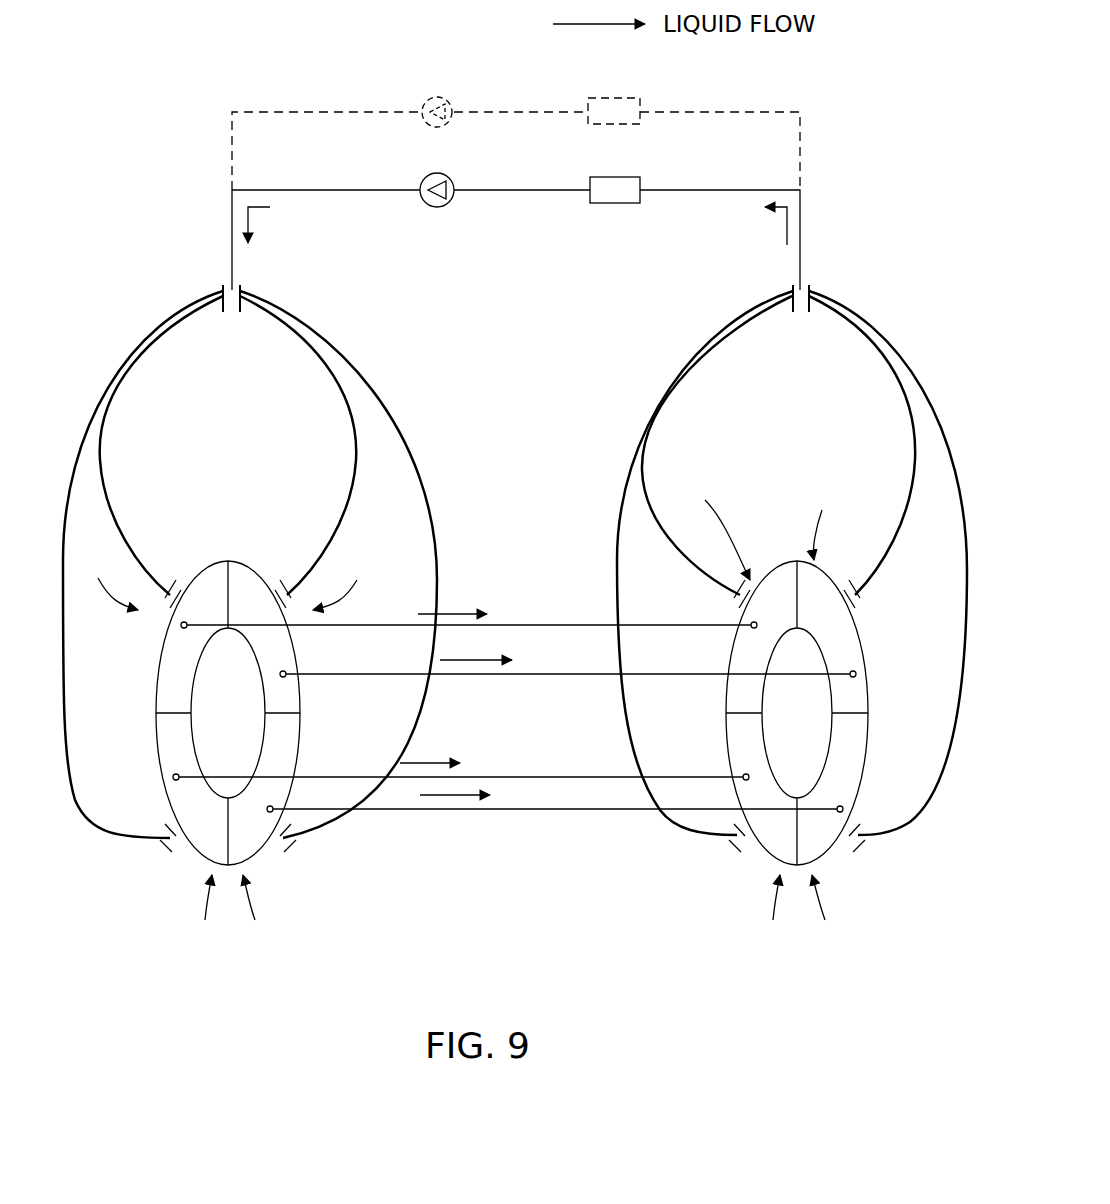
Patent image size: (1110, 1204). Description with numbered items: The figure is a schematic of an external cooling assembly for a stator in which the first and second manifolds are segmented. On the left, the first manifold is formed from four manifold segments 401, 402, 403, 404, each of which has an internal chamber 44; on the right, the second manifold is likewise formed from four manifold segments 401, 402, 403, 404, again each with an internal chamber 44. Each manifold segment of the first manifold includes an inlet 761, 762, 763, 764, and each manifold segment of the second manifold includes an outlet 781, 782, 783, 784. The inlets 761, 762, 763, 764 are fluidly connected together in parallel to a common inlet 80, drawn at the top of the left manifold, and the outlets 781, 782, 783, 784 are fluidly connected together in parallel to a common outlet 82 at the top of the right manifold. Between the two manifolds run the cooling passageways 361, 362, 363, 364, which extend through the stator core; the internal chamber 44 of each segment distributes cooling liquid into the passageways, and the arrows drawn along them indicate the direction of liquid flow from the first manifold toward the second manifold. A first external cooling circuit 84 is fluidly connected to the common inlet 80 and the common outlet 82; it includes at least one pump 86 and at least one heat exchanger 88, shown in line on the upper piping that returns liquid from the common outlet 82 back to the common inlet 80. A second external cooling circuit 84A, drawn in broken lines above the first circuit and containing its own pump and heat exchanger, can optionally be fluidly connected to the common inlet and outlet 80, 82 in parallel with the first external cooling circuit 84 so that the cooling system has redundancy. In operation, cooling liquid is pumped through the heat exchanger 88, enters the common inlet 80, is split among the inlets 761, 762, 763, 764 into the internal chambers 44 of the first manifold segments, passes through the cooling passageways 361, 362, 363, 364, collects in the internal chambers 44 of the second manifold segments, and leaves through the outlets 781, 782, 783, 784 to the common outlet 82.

The first cooling passageway 361 is at (506, 625).
The second cooling passageway 362 is at (493, 777).
The third cooling passageway 363 is at (553, 811).
The fourth cooling passageway 364 is at (558, 674).
The first manifold segment 401 is at (411, 539).
The second manifold segment 402 is at (485, 916).
The third manifold segment 403 is at (554, 912).
The fourth manifold segment 404 is at (577, 540).
The internal chamber 44 is at (170, 642).
The first inlet 761 is at (180, 594).
The second inlet 762 is at (172, 848).
The third inlet 763 is at (284, 848).
The fourth inlet 764 is at (278, 595).
The first outlet 781 is at (746, 592).
The second outlet 782 is at (742, 848).
The third outlet 783 is at (852, 848).
The fourth outlet 784 is at (860, 612).
The common inlet 80 is at (242, 291).
The common outlet 82 is at (792, 292).
The first external cooling circuit 84 is at (803, 222).
The second external cooling circuit 84A is at (803, 150).
The pump 86 is at (437, 207).
The heat exchanger 88 is at (613, 203).